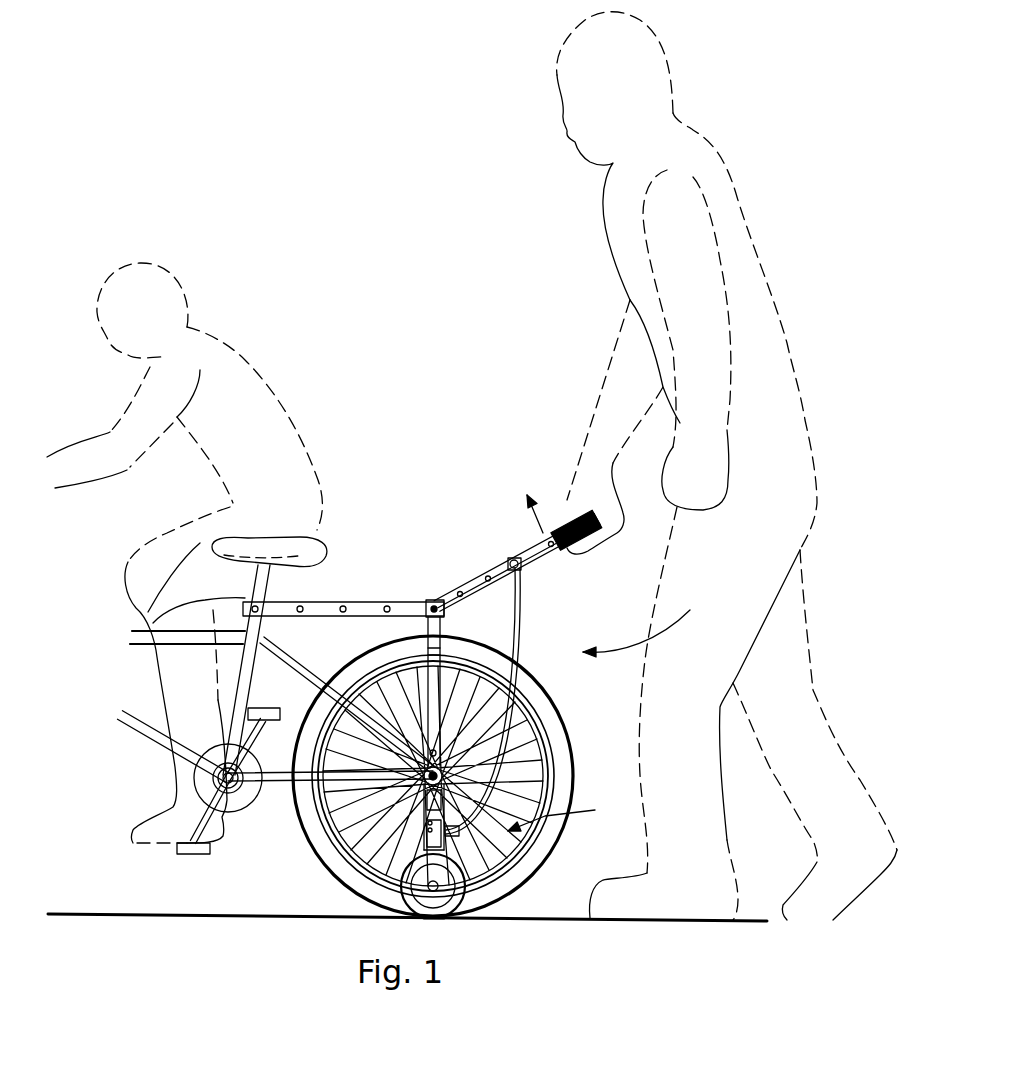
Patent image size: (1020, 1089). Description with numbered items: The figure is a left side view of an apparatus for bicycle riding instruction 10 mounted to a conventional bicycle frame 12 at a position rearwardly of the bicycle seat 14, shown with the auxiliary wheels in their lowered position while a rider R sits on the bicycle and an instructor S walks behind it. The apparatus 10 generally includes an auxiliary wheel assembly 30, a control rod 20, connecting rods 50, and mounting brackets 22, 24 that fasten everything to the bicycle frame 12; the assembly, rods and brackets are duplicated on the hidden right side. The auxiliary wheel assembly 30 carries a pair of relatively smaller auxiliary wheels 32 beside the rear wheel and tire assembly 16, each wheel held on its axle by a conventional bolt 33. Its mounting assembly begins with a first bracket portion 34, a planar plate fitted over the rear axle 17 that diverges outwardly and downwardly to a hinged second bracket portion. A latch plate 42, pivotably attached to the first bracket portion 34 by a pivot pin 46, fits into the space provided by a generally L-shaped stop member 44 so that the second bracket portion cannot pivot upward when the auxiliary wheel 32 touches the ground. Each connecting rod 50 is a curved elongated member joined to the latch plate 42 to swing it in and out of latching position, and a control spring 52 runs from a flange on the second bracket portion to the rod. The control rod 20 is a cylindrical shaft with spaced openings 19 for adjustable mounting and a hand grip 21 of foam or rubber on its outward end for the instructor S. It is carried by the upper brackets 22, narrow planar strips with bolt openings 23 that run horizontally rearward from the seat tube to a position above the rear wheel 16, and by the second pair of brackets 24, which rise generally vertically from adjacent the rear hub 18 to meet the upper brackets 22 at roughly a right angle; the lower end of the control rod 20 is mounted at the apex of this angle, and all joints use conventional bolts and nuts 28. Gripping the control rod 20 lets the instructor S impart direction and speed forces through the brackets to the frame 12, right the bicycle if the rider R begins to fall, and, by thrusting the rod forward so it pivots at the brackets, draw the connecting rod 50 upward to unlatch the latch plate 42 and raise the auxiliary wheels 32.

The apparatus for bicycle riding instruction 10 is at (644, 621).
The bicycle frame 12 is at (154, 670).
The bicycle seat 14 is at (182, 530).
The rear wheel and tire assembly 16 is at (543, 847).
The rear axle 17 is at (420, 795).
The rear hub 18 is at (515, 774).
The openings 19 is at (505, 566).
The control rod 20 is at (466, 588).
The hand grip 21 is at (566, 520).
The upper brackets 22 is at (320, 604).
The bolt openings 23 is at (386, 605).
The second pair of brackets 24 is at (430, 697).
The bolts and nuts 28 is at (155, 612).
The auxiliary wheel assembly 30 is at (566, 815).
The auxiliary wheels 32 is at (473, 900).
The bolt 33 is at (453, 918).
The first bracket portion 34 is at (425, 825).
The latch plate 42 is at (393, 873).
The stop member 44 is at (415, 852).
The pivot pin 46 is at (418, 853).
The connecting rods 50 is at (520, 600).
The control spring 52 is at (512, 858).
The rider R is at (277, 393).
The instructor S is at (608, 244).